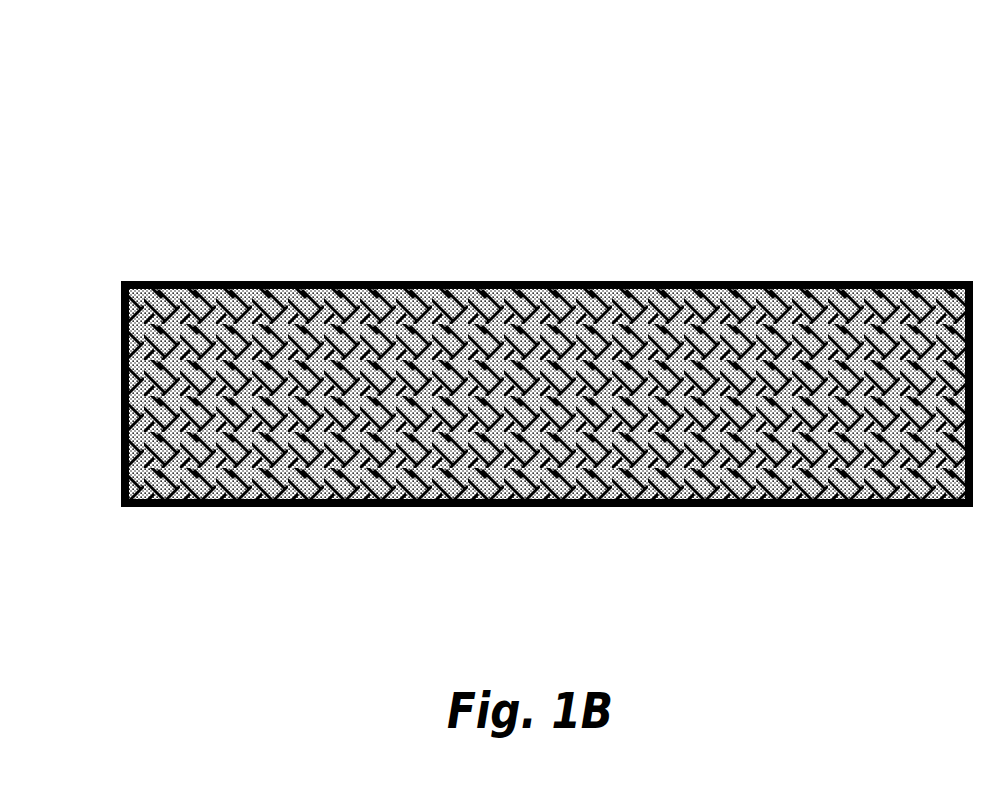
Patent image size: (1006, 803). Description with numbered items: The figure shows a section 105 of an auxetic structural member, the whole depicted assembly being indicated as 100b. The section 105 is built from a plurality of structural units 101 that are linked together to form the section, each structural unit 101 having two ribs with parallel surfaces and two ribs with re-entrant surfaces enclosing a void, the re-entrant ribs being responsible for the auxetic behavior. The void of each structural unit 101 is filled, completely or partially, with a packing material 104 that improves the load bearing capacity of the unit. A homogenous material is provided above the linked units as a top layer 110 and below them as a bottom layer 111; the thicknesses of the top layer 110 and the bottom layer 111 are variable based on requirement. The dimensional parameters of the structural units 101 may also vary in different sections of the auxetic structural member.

The composite material 100b is at (203, 126).
The structural unit 101 is at (555, 454).
The packing material 104 is at (318, 485).
The section 105 is at (365, 278).
The top layer 110 is at (707, 278).
The bottom layer 111 is at (712, 512).